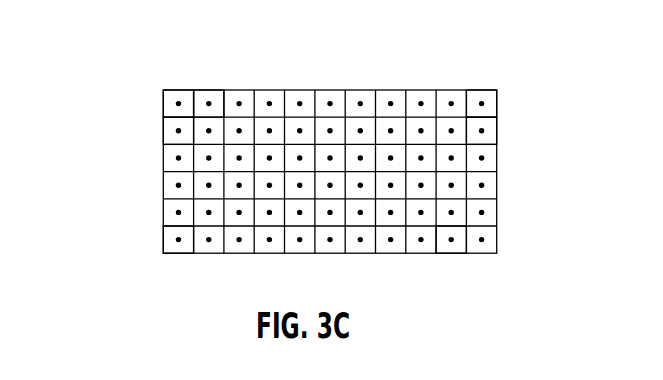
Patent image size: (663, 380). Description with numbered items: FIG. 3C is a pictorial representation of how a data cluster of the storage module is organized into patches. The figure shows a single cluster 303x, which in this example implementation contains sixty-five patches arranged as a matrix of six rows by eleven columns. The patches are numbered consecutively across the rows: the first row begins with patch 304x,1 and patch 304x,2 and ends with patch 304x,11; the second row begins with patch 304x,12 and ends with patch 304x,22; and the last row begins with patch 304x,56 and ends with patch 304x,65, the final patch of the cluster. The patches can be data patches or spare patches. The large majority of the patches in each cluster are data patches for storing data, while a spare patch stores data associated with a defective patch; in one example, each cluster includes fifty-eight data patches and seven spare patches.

The data cluster 303x is at (362, 70).
The patch 304x,1 is at (123, 95).
The patch 304x,2 is at (159, 81).
The patch 304x,11 is at (544, 91).
The patch 304x,12 is at (114, 125).
The patch 304x,22 is at (544, 125).
The patch 304x,56 is at (114, 232).
The patch 304x,65 is at (504, 261).